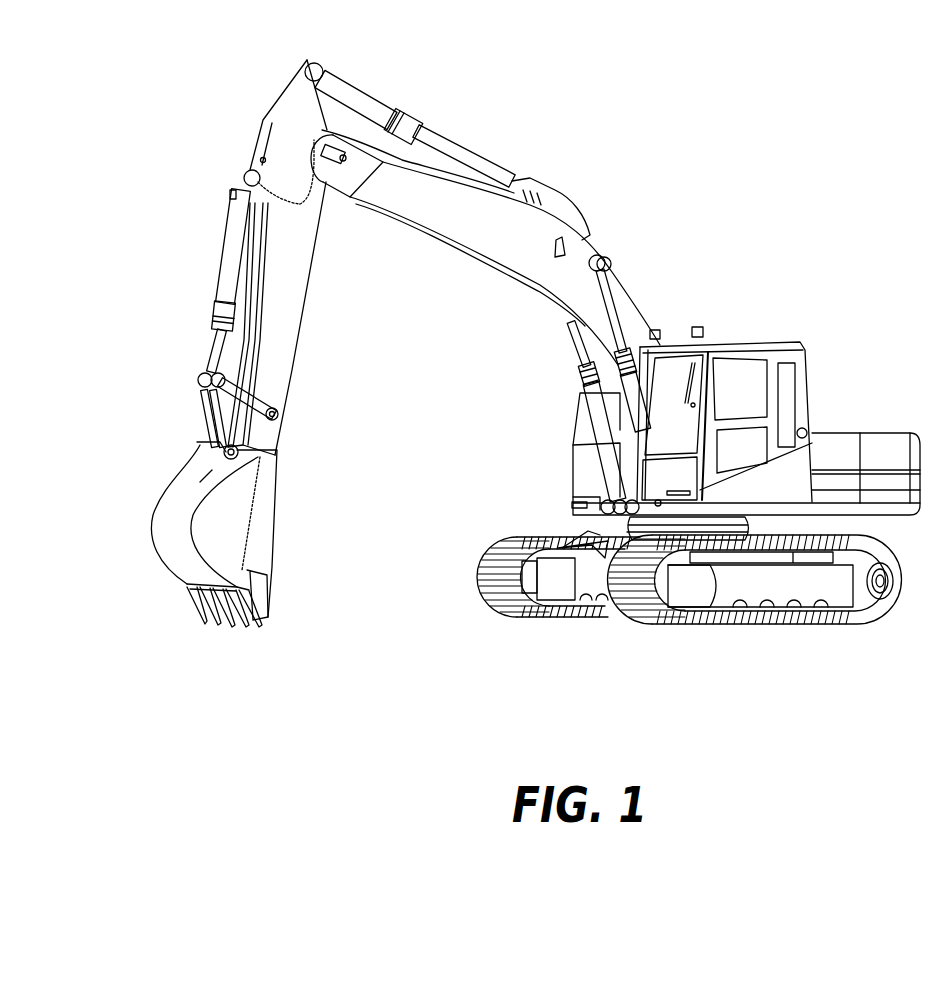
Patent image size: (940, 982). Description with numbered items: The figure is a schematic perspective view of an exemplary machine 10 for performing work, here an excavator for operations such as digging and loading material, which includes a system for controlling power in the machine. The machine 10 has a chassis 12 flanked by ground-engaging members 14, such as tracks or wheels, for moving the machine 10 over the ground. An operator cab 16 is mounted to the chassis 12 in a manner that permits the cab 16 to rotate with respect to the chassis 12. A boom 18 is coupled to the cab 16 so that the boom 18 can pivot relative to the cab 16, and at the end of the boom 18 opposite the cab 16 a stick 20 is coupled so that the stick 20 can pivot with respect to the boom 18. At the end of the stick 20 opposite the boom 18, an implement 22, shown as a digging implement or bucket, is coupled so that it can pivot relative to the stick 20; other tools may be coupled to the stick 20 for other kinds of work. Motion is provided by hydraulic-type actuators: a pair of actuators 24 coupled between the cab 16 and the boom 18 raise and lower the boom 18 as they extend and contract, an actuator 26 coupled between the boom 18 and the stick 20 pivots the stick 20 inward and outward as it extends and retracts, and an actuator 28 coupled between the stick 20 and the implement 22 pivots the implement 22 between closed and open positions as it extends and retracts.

The machine 10 is at (730, 239).
The chassis 12 is at (607, 555).
The ground-engaging members 14 is at (472, 574).
The operator cab 16 is at (812, 376).
The boom 18 is at (540, 230).
The stick 20 is at (300, 307).
The implement 22 is at (265, 518).
The actuators 24 is at (613, 280).
The actuator 26 is at (437, 143).
The actuator 28 is at (226, 268).